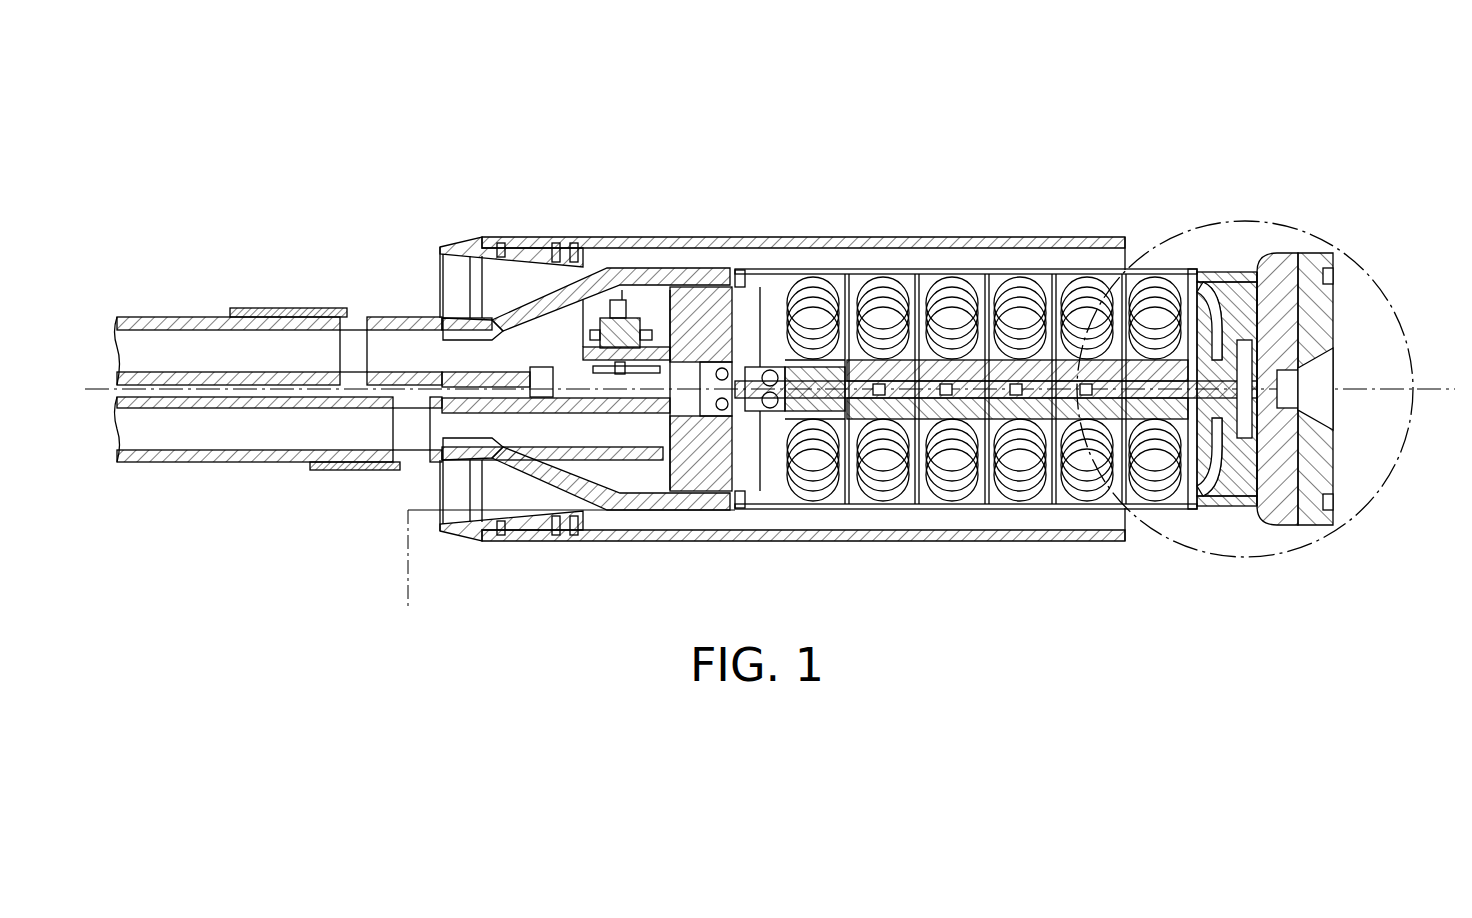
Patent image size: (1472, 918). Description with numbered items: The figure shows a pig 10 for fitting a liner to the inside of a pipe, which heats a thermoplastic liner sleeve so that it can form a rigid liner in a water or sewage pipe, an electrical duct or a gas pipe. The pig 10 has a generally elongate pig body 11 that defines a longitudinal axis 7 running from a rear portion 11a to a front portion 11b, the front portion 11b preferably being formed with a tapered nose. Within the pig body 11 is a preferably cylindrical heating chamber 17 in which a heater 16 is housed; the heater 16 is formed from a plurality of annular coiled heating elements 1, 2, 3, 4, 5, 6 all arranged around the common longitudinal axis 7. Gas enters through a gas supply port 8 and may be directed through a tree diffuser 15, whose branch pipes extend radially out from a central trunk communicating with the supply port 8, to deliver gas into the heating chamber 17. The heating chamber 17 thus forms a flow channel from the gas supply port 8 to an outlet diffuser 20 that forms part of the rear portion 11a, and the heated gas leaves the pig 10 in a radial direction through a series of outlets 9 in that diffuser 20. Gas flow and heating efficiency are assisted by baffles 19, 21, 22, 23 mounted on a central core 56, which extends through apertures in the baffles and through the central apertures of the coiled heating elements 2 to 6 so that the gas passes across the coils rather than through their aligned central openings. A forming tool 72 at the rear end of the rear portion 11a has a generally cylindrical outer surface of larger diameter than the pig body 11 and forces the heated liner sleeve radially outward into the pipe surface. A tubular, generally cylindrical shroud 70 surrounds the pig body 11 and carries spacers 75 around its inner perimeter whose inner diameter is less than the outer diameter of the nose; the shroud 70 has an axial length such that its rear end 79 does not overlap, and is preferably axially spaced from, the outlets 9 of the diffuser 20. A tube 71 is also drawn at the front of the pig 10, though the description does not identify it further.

The pig 10 is at (877, 100).
The pig body 11 is at (747, 262).
The rear portion 11a is at (1285, 535).
The front portion 11b is at (540, 472).
The coiled heating element 1 is at (812, 282).
The coiled heating element 2 is at (880, 283).
The coiled heating element 3 is at (947, 283).
The coiled heating element 4 is at (1020, 283).
The coiled heating element 5 is at (1086, 280).
The coiled heating element 6 is at (1157, 280).
The longitudinal axis 7 is at (1406, 316).
The gas supply port 8 is at (496, 458).
The outlets 9 is at (1201, 442).
The tree diffuser 15 is at (746, 482).
The heater 16 is at (993, 278).
The heating chamber 17 is at (769, 280).
The baffle 19 is at (857, 424).
The outlet diffuser 20 is at (1232, 246).
The baffle 21 is at (990, 512).
The baffle 22 is at (1055, 512).
The baffle 23 is at (1072, 356).
The central core 56 is at (862, 424).
The shroud 70 is at (525, 244).
The tube 71 is at (305, 317).
The forming tool 72 is at (1318, 253).
The spacers 75 is at (566, 244).
The shroud rear end 79 is at (1112, 270).